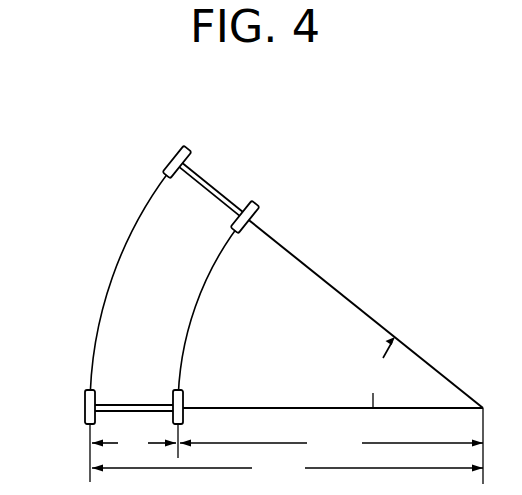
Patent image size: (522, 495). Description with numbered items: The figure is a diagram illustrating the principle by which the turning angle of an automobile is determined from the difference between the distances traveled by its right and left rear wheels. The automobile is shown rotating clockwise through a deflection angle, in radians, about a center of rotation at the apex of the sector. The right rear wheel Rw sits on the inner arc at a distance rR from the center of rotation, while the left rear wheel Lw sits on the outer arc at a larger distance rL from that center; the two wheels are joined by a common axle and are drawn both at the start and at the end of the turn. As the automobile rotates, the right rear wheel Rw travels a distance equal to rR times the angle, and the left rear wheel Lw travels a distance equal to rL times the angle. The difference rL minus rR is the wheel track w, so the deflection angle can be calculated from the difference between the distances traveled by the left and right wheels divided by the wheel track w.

The left rear wheel Lw is at (163, 155).
The right rear wheel Rw is at (262, 213).
The wheel track w is at (134, 443).
The distance between the center of rotation and the right rear wheel rR is at (331, 443).
The distance between the center of rotation and the left rear wheel rL is at (287, 469).